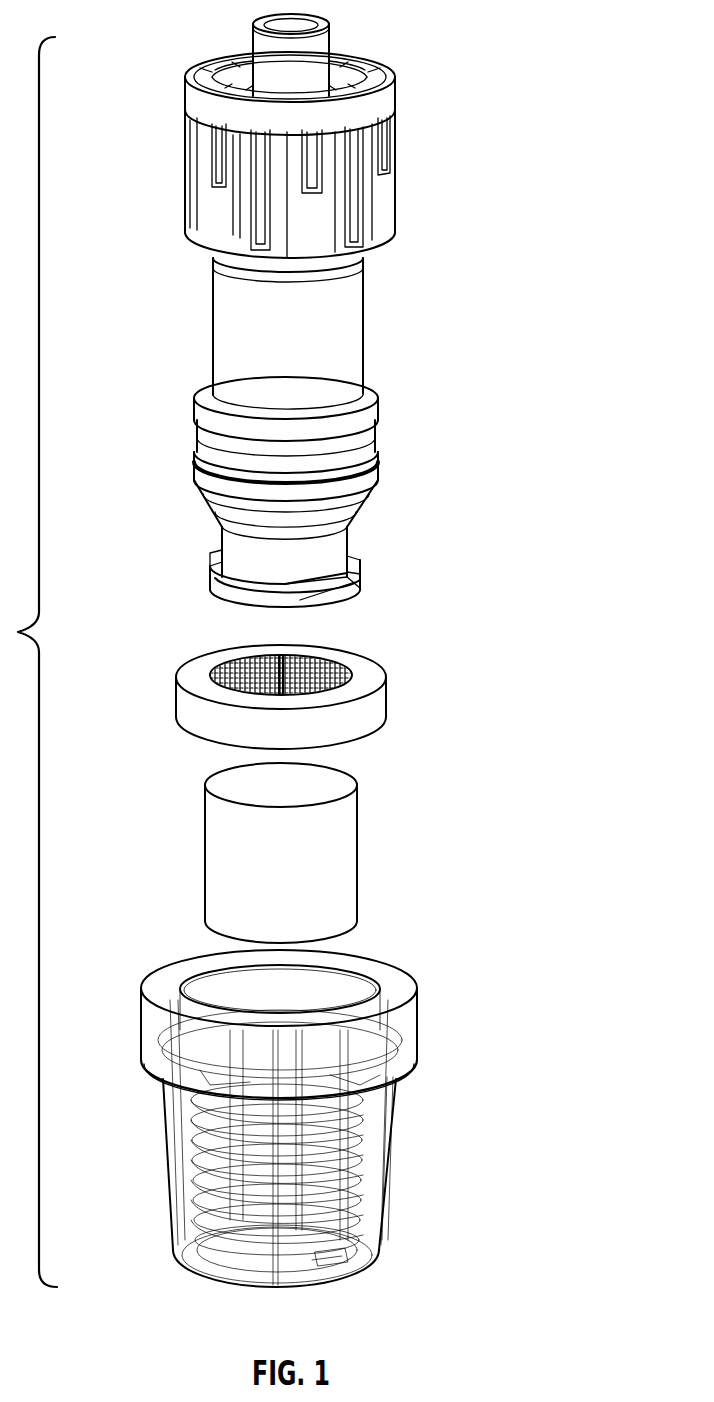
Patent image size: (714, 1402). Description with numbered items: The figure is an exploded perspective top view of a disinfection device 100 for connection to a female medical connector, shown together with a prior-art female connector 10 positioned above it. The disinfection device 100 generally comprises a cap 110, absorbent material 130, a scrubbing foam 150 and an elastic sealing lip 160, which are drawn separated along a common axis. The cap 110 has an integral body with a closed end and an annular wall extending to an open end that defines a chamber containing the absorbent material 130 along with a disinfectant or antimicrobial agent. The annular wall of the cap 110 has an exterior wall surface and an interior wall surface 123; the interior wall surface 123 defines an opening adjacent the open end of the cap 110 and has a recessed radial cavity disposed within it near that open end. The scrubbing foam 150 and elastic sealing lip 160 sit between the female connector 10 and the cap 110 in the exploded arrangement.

The disinfection device 100 is at (541, 1151).
The female connector 10 is at (363, 342).
The cap 110 is at (403, 1080).
The interior wall surface 123 is at (213, 1002).
The absorbent material 130 is at (205, 865).
The scrubbing foam 150 is at (176, 700).
The elastic sealing lip 160 is at (353, 663).